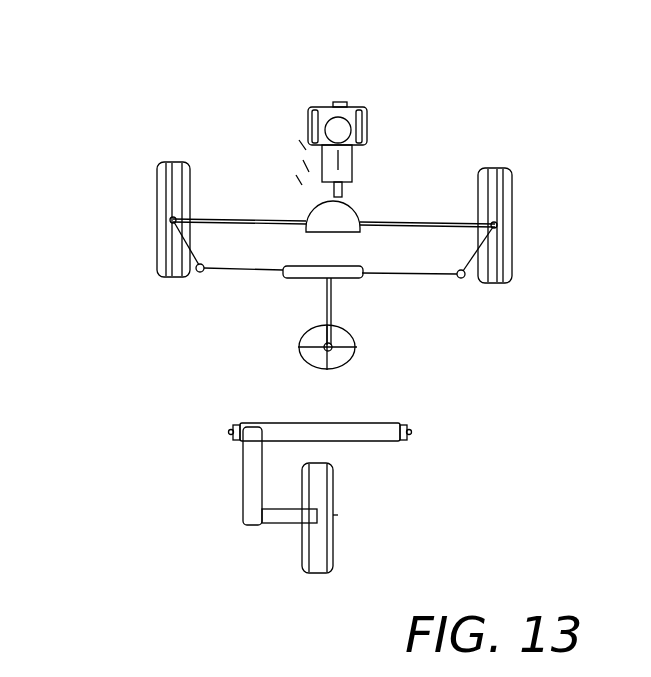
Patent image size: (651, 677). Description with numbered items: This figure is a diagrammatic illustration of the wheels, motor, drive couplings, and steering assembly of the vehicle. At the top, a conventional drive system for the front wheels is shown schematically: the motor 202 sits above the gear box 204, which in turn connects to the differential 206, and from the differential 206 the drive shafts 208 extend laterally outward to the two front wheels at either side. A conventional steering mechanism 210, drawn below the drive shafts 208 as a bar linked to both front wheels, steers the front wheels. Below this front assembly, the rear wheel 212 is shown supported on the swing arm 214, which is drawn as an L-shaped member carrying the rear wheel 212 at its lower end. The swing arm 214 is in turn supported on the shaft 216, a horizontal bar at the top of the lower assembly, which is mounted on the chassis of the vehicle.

The motor 202 is at (420, 98).
The gear box 204 is at (462, 146).
The differential 206 is at (206, 161).
The drive shafts 208 is at (252, 220).
The steering mechanism 210 is at (308, 279).
The rear wheel 212 is at (335, 508).
The swing arm 214 is at (243, 478).
The shaft 216 is at (360, 432).